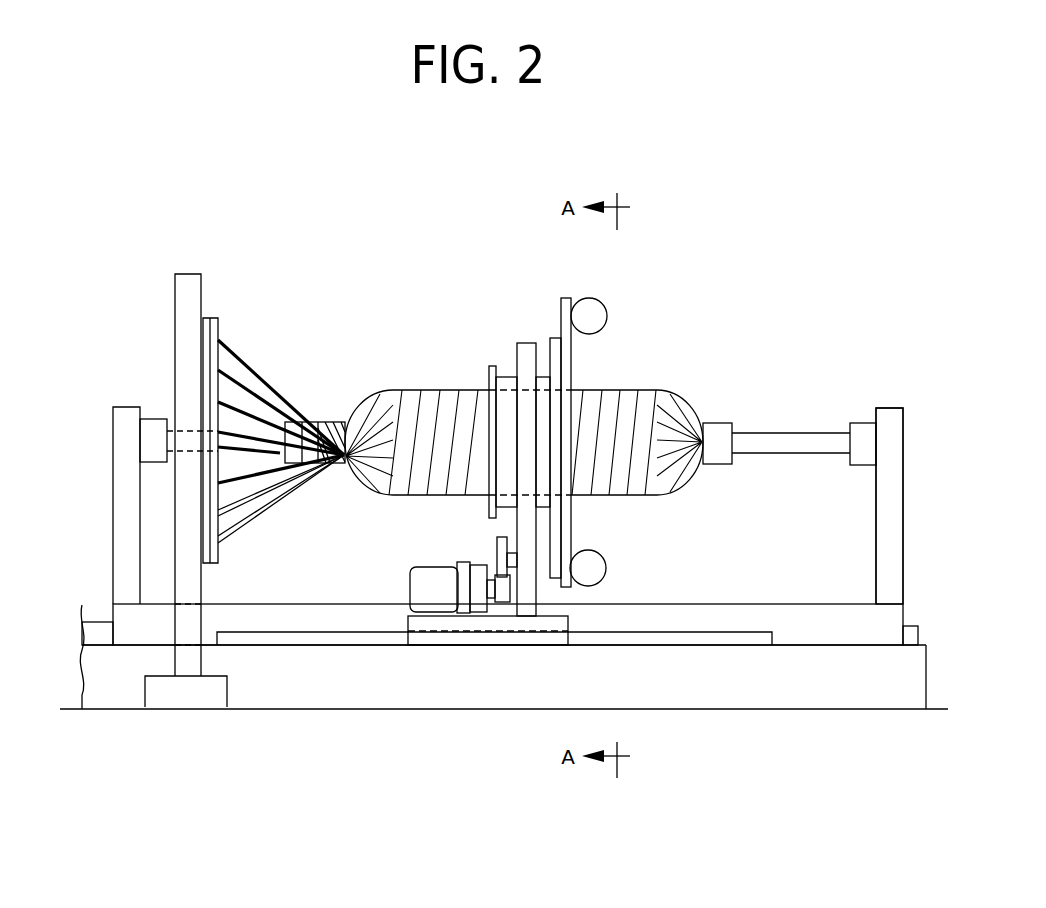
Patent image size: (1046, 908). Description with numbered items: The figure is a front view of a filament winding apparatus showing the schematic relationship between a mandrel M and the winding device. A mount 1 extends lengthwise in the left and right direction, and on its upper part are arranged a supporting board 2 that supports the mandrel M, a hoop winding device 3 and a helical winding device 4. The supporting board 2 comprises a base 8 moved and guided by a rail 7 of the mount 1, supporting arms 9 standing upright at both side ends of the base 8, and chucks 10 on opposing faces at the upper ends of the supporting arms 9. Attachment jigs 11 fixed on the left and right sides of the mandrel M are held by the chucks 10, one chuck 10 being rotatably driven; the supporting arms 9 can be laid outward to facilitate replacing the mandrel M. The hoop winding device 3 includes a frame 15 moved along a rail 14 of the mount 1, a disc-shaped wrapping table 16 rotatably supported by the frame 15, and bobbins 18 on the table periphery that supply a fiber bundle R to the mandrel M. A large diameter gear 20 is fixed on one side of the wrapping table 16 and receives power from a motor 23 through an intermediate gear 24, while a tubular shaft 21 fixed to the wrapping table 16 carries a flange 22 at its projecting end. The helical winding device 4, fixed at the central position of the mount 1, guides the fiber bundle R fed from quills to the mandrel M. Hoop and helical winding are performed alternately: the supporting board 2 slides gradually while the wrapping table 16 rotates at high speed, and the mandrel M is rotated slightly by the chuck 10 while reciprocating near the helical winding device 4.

The mount 1 is at (785, 690).
The supporting board 2 is at (912, 418).
The hoop winding device 3 is at (628, 308).
The helical winding device 4 is at (222, 302).
The rail 7 is at (100, 625).
The base 8 is at (820, 620).
The supporting arm 9 is at (117, 498).
The chuck 10 is at (147, 420).
The attachment jig 11 is at (270, 388).
The rail 14 is at (320, 630).
The frame 15 is at (512, 640).
The wrapping table 16 is at (572, 372).
The bobbin 18 is at (592, 305).
The large diameter gear 20 is at (540, 343).
The tubular shaft 21 is at (504, 372).
The flange 22 is at (487, 372).
The motor 23 is at (418, 583).
The intermediate gear 24 is at (498, 552).
The mandrel M is at (350, 396).
The fiber bundle R is at (250, 427).